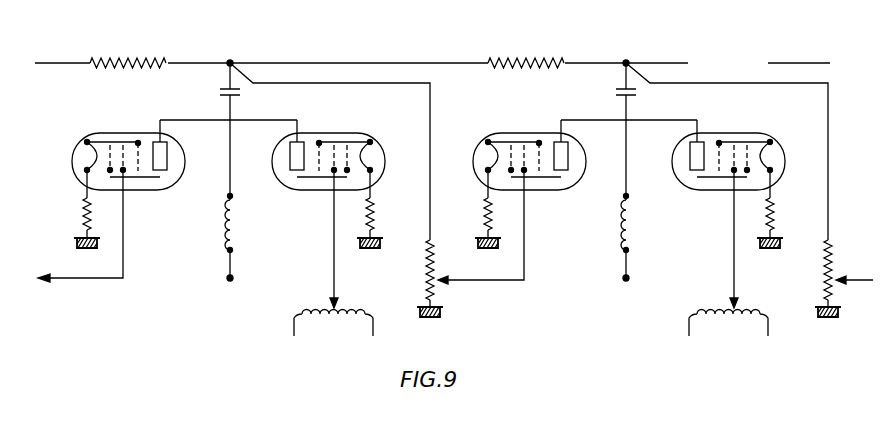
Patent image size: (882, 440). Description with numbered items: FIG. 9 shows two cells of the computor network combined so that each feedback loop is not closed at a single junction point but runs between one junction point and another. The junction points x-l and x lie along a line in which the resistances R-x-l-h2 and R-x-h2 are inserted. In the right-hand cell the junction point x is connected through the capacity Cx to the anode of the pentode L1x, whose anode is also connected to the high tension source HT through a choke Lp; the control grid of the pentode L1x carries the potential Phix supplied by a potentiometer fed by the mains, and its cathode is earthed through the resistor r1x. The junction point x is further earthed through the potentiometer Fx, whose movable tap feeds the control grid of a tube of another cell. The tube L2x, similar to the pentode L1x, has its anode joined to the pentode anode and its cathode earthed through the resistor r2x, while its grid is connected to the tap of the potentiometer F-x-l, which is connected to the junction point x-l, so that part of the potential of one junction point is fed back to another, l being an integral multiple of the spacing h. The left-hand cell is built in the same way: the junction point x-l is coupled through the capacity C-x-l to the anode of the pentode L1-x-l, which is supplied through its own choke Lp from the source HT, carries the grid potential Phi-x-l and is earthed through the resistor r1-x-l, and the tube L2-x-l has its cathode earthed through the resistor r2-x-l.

The line resistance R(x-l-h/2) R-x-l-h2 is at (137, 46).
The junction point x-l is at (230, 60).
The capacity C(x-l) C-x-l is at (240, 98).
The tube L2(x-l) L2-x-l is at (101, 134).
The pentode L1(x-l) L1-x-l is at (314, 134).
The resistor r2(x-l) r2-x-l is at (83, 208).
The choke L' Lp is at (220, 228).
The high tension source HT is at (422, 286).
The resistor r1(x-l) r1-x-l is at (374, 204).
The grid potential φ(x-l) Phi-x-l is at (354, 283).
The resistor r1(x) r1x is at (778, 208).
The potentiometer F(x-l) F-x-l is at (481, 228).
The line resistance R(x-h/2) R-x-h2 is at (552, 46).
The junction point x is at (626, 60).
The capacity Cx is at (637, 95).
The tube L2x is at (519, 134).
The resistor r2(x) r2x is at (484, 208).
The pentode L1x is at (733, 134).
The grid potential φ(x) Phix is at (748, 283).
The potentiometer Fx is at (844, 278).